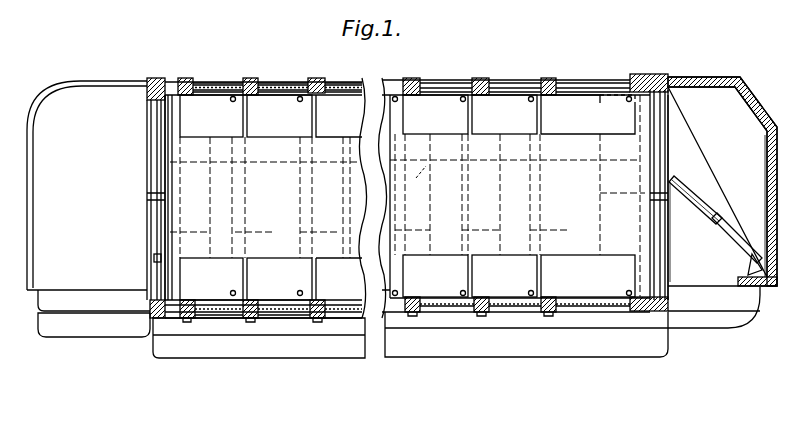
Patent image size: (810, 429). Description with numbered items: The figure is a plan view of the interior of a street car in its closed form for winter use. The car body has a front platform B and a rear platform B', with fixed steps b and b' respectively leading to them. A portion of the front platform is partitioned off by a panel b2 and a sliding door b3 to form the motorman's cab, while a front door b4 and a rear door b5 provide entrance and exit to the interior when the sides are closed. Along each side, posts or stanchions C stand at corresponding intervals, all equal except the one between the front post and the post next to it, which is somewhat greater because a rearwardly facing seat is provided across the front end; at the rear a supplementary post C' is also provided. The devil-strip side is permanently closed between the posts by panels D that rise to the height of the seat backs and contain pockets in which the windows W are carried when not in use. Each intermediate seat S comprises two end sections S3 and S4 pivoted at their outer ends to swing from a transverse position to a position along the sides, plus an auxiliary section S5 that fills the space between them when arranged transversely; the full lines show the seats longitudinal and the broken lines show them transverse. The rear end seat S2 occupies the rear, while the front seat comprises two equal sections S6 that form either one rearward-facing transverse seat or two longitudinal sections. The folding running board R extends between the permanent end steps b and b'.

The rear platform B' is at (87, 185).
The front platform B is at (722, 188).
The supplementary post C' is at (146, 206).
The posts or stanchions C is at (367, 211).
The panels D is at (260, 82).
The windows W is at (283, 85).
The intermediate seat S is at (340, 197).
The rear end seat S2 is at (265, 197).
The end section of intermediate seat S3 is at (358, 277).
The end section of intermediate seat S4 is at (402, 148).
The auxiliary section S5 is at (440, 196).
The front seat section S6 is at (588, 196).
The fixed step b is at (714, 307).
The fixed step b' is at (94, 313).
The panel b2 is at (706, 212).
The sliding door b3 is at (735, 240).
The front door b4 is at (668, 249).
The rear door b5 is at (157, 253).
The running board R is at (410, 335).